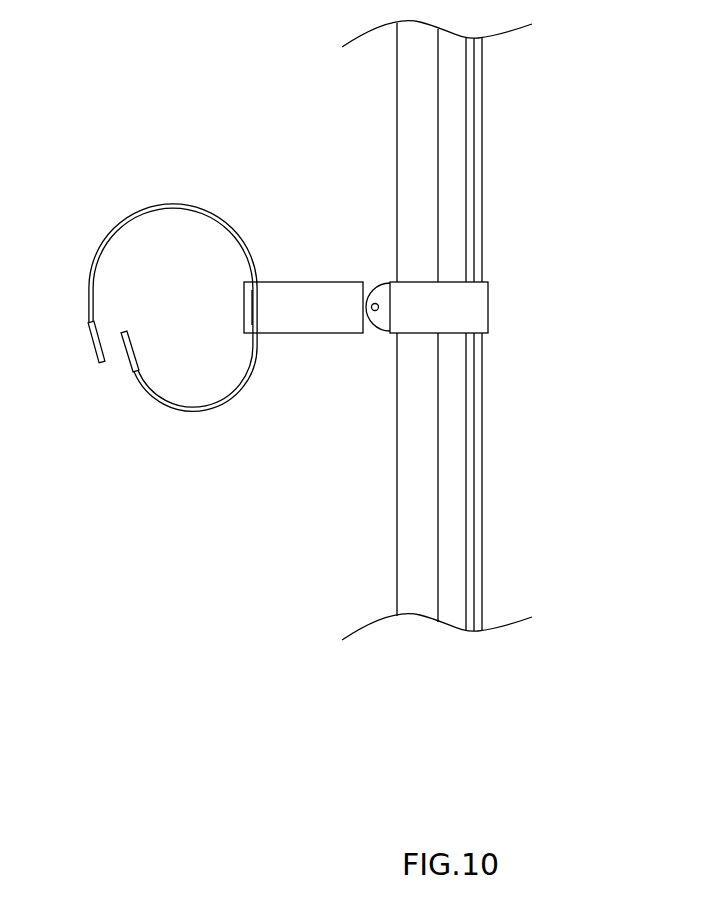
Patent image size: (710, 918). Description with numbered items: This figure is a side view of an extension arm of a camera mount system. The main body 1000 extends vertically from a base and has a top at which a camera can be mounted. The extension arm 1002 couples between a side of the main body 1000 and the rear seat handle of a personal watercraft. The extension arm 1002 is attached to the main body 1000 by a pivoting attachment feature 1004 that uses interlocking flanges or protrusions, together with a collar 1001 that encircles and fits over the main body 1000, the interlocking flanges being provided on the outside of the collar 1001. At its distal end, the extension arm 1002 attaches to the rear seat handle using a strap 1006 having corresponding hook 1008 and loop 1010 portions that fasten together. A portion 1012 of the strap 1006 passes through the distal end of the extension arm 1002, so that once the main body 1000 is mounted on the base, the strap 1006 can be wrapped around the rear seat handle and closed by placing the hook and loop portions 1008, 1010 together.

The main body 1000 is at (482, 188).
The collar 1001 is at (487, 307).
The extension arm 1002 is at (303, 282).
The pivoting attachment feature 1004 is at (368, 282).
The strap 1006 is at (173, 202).
The hook portion 1008 is at (97, 345).
The loop portion 1010 is at (167, 407).
The portion of the strap 1012 is at (258, 308).